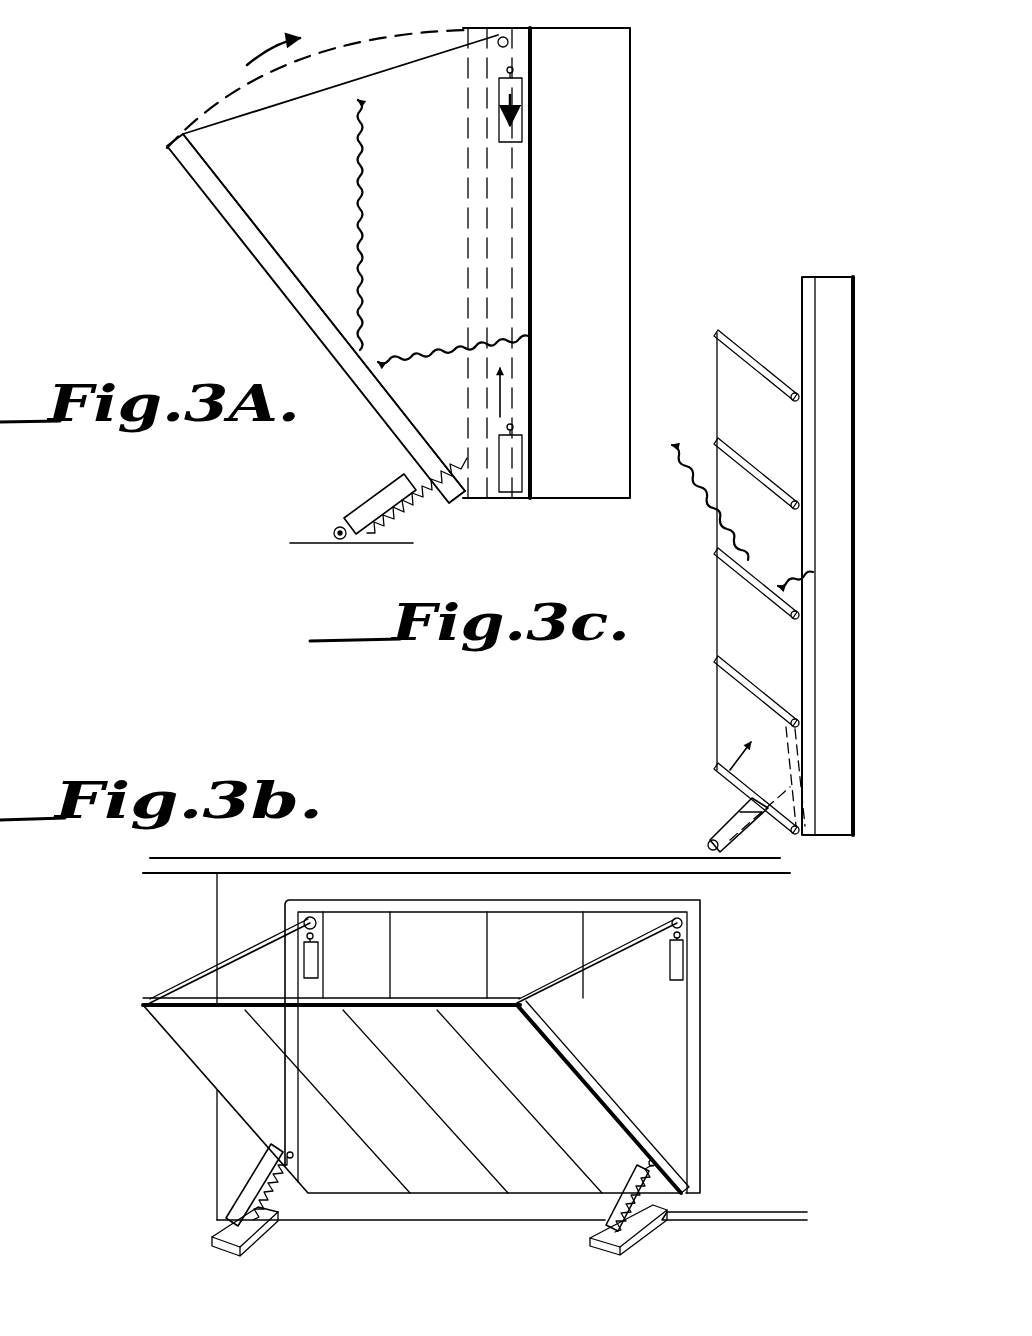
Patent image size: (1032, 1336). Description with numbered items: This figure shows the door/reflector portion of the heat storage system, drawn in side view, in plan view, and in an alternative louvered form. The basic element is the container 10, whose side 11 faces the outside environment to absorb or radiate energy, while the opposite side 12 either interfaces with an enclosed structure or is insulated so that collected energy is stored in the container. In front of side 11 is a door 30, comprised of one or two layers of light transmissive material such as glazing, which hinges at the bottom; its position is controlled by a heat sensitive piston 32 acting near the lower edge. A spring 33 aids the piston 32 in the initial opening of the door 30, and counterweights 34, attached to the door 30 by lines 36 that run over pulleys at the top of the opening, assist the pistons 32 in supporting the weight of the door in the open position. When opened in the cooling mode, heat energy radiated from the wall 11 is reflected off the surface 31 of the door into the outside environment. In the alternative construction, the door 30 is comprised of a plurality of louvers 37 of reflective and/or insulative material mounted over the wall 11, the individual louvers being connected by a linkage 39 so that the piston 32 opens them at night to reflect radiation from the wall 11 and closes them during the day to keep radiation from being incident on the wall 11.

In FIG. 3A, the container 10 is at (660, 295).
In FIG. 3C, the container 10 is at (862, 522).
In FIG. 3B, the container 10 is at (492, 1046).
In FIG. 3A, the side of container 11 is at (533, 208).
In FIG. 3C, the side of container 11 is at (820, 628).
In FIG. 3A, the opposite side of container 12 is at (630, 210).
In FIG. 3C, the opposite side of container 12 is at (853, 686).
In FIG. 3A, the door 30 is at (277, 272).
In FIG. 3B, the door 30 is at (485, 1098).
In FIG. 3A, the surface 31 is at (267, 237).
In FIG. 3B, the surface 31 is at (563, 1048).
In FIG. 3A, the heat sensitive piston 32 is at (357, 513).
In FIG. 3C, the heat sensitive piston 32 is at (740, 815).
In FIG. 3B, the heat sensitive piston 32 is at (247, 1183).
In FIG. 3A, the spring 33 is at (393, 512).
In FIG. 3B, the spring 33 is at (287, 1187).
In FIG. 3A, the counterweight 34 is at (522, 93).
In FIG. 3B, the counterweight 34 is at (318, 960).
In FIG. 3A, the line 36 is at (410, 13).
In FIG. 3B, the line 36 is at (202, 970).
In FIG. 3C, the louver 37 is at (720, 683).
In FIG. 3C, the linkage 39 is at (717, 648).